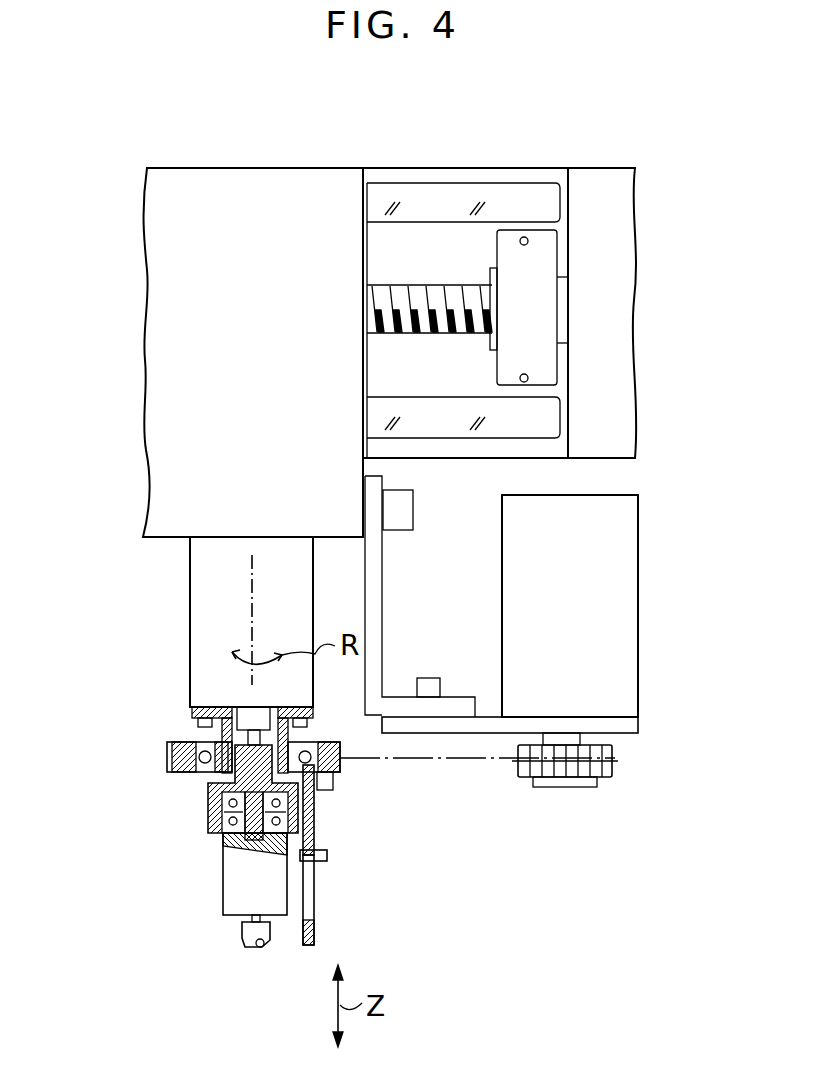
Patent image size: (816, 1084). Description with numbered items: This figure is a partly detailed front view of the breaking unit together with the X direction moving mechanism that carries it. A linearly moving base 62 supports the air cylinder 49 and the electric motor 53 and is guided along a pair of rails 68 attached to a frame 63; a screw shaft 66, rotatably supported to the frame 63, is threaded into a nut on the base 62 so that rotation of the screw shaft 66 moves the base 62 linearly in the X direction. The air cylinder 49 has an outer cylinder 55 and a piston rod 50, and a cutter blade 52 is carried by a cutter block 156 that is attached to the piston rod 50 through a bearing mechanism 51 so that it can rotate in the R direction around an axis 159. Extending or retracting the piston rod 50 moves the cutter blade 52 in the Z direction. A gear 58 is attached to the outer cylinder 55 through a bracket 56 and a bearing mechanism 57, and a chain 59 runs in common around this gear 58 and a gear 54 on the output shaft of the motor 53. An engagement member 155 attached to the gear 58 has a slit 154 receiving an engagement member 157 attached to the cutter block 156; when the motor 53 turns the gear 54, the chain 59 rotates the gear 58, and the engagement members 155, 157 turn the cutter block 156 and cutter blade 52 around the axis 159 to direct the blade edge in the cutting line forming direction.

The linearly moving base 62 is at (275, 183).
The frame 63 is at (548, 170).
The screw shaft 66 is at (430, 285).
The pair of rails 68 is at (470, 190).
The electric motor 53 is at (620, 556).
The air cylinder 49 is at (200, 580).
The outer cylinder 55 is at (200, 665).
The axis 159 is at (250, 640).
The piston rod 50 is at (240, 733).
The bearing mechanism 57 is at (305, 748).
The gear 58 is at (175, 758).
The bracket 56 is at (220, 778).
The bearing mechanism 51 is at (230, 843).
The cutter block 156 is at (225, 905).
The cutter blade 52 is at (258, 950).
The engagement member 155 is at (316, 815).
The slit 154 is at (316, 905).
The engagement member 157 is at (330, 858).
The chain 59 is at (466, 762).
The gear 54 is at (605, 780).